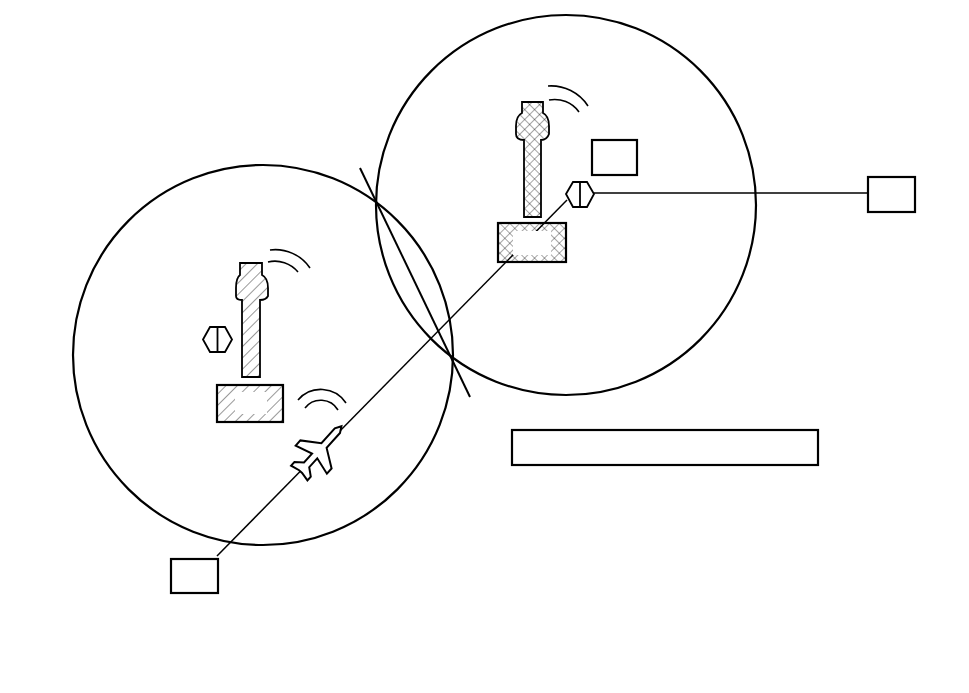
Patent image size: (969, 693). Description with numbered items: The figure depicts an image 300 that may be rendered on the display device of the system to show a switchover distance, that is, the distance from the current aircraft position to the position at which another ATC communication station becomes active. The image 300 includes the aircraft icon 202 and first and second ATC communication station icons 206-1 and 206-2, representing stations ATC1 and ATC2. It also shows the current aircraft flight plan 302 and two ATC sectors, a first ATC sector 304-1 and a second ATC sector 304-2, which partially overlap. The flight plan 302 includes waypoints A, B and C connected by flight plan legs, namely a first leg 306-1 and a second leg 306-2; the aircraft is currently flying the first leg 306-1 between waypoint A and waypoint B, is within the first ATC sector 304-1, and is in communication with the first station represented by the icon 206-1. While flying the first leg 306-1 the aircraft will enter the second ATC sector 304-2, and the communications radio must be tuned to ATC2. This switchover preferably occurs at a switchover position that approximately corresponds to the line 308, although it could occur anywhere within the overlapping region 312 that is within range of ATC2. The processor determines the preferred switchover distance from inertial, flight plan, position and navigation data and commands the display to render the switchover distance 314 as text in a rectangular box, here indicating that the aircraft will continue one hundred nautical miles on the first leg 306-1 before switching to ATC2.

The image 300 is at (116, 88).
The aircraft icon 202 is at (294, 444).
The first ATC communication station icon 206-1 is at (236, 287).
The second ATC communication station icon 206-2 is at (518, 158).
The current aircraft flight plan 302 is at (241, 566).
The first ATC sector 304-1 is at (137, 210).
The second ATC sector 304-2 is at (433, 72).
The first leg 306-1 is at (399, 370).
The second leg 306-2 is at (673, 195).
The line 308 is at (362, 175).
The overlapping region 312 is at (414, 268).
The switchover distance 314 is at (790, 430).